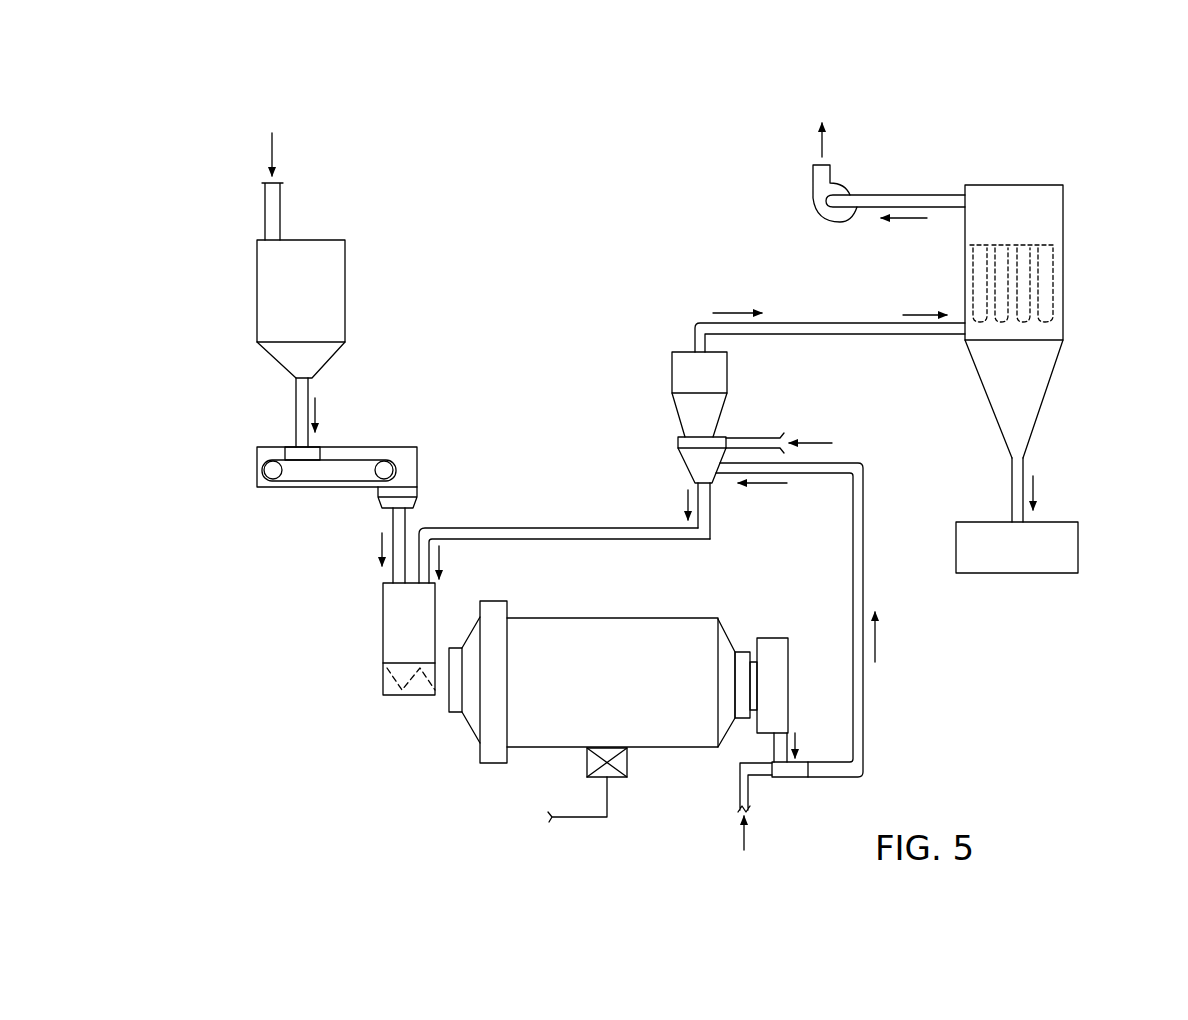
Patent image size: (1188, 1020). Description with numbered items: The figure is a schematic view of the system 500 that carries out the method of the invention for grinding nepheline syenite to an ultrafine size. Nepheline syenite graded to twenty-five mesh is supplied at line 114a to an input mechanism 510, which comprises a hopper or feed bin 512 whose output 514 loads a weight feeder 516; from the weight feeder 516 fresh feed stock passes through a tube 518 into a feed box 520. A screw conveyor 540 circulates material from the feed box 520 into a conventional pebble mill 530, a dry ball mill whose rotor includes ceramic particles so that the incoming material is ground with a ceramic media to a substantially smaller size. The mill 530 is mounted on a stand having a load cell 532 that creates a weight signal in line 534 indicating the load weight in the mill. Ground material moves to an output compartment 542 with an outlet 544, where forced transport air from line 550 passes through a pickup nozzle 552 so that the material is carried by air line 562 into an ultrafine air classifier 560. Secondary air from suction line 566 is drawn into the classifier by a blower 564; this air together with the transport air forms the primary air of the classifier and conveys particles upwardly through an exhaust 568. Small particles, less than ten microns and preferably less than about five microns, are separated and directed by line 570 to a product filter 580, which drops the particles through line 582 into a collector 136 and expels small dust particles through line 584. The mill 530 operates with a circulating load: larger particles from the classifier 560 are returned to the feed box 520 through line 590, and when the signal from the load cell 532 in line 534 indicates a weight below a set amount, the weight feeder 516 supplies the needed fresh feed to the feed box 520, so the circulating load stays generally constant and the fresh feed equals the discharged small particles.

The system 500 is at (608, 128).
The input mechanism 510 is at (374, 392).
The line 114a is at (280, 200).
The hopper or feed bin 512 is at (265, 282).
The output 514 is at (296, 405).
The weight feeder 516 is at (305, 488).
The tube 518 is at (385, 522).
The feed box 520 is at (383, 620).
The screw conveyor 540 is at (414, 697).
The pebble mill 530 is at (590, 618).
The load cell 532 is at (587, 762).
The line 534 is at (575, 818).
The output compartment 542 is at (770, 638).
The outlet 544 is at (770, 748).
The line 550 is at (738, 790).
The pickup nozzle 552 is at (800, 780).
The air line 562 is at (863, 500).
The ultrafine air classifier 560 is at (678, 462).
The suction line 566 is at (757, 438).
The exhaust 568 is at (672, 378).
The line 570 is at (840, 323).
The line 590 is at (516, 528).
The product filter 580 is at (1063, 233).
The line 582 is at (1023, 470).
The collector 136 is at (1080, 552).
The line 584 is at (905, 194).
The blower 564 is at (813, 190).